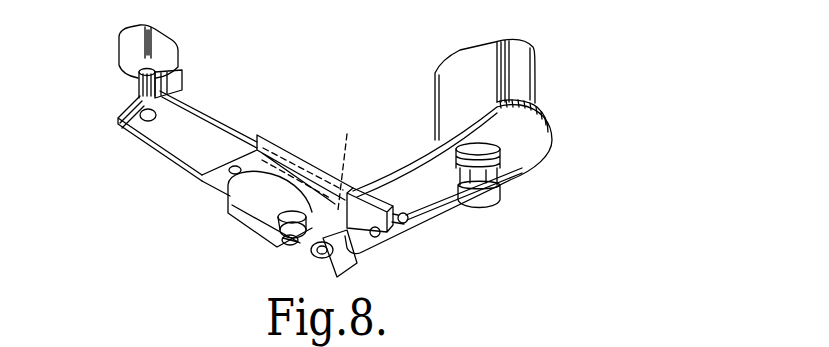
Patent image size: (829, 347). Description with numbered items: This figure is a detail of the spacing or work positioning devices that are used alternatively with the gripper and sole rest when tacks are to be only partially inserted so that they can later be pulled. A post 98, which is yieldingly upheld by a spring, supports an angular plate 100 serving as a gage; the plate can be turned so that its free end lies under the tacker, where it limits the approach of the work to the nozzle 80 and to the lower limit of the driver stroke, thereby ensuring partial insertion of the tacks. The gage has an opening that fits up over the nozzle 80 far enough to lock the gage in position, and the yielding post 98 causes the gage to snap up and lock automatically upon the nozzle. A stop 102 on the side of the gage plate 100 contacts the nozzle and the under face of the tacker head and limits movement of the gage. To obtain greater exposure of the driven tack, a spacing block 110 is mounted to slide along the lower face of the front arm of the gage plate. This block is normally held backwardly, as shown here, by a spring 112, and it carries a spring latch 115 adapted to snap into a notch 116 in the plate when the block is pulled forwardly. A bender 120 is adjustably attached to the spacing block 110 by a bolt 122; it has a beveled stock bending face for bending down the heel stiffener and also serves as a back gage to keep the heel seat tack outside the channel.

The nozzle 80 is at (140, 92).
The stop 102 is at (175, 82).
The spacing block 110 is at (203, 176).
The notch 116 is at (316, 156).
The bender 120 is at (245, 220).
The bolt 122 is at (292, 242).
The spring latch 115 is at (355, 264).
The angular plate 100 is at (390, 172).
The post 98 is at (494, 200).
The spring 112 is at (427, 213).